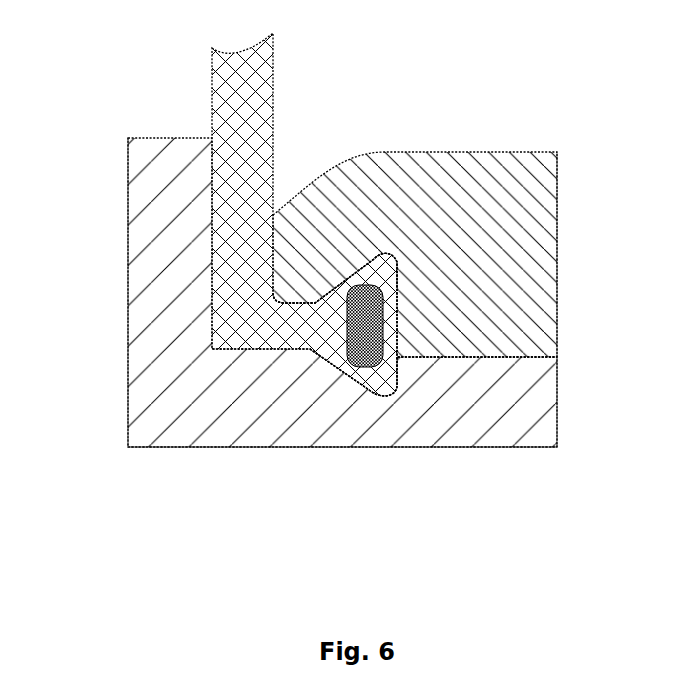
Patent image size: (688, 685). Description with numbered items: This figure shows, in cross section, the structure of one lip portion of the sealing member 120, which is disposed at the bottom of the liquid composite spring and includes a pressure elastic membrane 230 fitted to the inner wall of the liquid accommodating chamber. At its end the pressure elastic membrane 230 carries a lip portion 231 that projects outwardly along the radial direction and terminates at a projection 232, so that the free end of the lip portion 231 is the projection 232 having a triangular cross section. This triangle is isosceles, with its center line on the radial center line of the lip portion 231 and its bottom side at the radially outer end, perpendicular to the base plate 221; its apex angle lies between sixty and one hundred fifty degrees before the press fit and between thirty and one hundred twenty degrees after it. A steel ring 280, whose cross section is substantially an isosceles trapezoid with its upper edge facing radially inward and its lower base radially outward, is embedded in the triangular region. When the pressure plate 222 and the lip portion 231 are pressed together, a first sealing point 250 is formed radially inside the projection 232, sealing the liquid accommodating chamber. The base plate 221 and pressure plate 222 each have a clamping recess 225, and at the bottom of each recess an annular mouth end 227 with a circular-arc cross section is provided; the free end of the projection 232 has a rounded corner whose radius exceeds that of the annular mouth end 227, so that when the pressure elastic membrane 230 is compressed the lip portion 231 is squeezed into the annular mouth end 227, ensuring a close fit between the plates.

The sealing member 120 is at (57, 49).
The base plate 221 is at (199, 408).
The pressure plate 222 is at (478, 213).
The clamping recess 225 is at (400, 255).
The annular mouth end 227 is at (390, 253).
The pressure elastic membrane 230 is at (240, 237).
The lip portion 231 is at (297, 325).
The projection 232 is at (377, 375).
The first sealing point 250 is at (293, 295).
The steel ring 280 is at (364, 330).